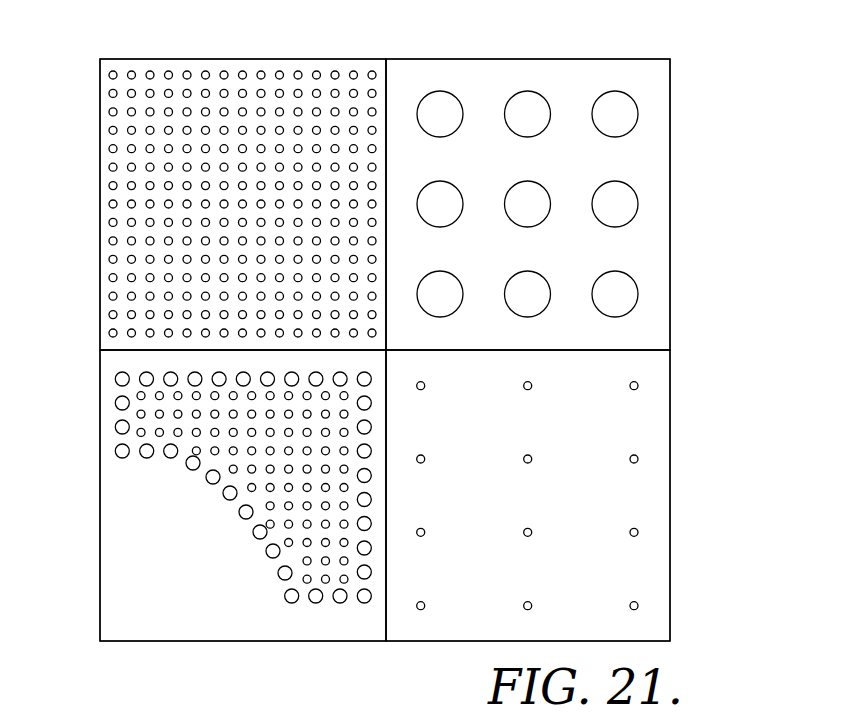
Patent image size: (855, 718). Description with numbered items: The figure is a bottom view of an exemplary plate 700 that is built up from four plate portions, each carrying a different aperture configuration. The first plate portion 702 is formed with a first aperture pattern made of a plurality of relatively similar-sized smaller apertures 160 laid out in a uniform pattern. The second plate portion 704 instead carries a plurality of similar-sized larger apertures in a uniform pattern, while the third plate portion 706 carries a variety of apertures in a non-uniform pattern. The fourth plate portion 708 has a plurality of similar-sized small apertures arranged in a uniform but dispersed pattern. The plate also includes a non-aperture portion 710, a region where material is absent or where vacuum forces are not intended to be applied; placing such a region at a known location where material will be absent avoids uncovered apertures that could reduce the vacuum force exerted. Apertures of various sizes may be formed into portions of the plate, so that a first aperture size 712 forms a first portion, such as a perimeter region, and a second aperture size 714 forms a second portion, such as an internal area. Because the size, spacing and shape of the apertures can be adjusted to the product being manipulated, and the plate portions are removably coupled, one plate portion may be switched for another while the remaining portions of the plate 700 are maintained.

The plate 700 is at (62, 67).
The first plate portion 702 is at (100, 172).
The second plate portion 704 is at (670, 214).
The third plate portion 706 is at (100, 517).
The fourth plate portion 708 is at (670, 561).
The non-aperture portion 710 is at (158, 571).
The first aperture size 712 is at (289, 606).
The second aperture size 714 is at (327, 548).
The apertures 160 is at (284, 90).